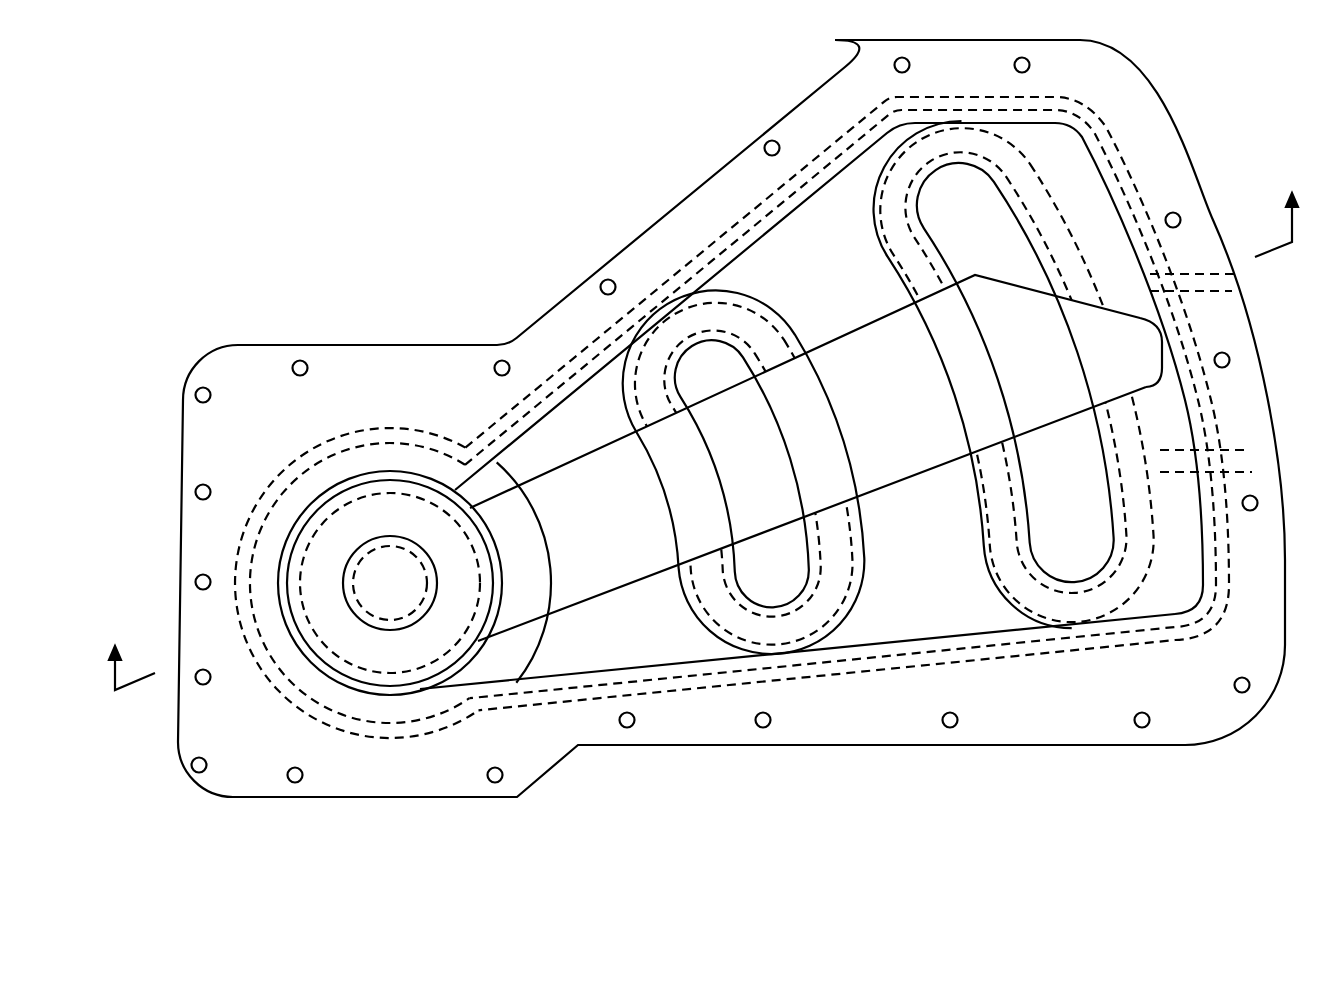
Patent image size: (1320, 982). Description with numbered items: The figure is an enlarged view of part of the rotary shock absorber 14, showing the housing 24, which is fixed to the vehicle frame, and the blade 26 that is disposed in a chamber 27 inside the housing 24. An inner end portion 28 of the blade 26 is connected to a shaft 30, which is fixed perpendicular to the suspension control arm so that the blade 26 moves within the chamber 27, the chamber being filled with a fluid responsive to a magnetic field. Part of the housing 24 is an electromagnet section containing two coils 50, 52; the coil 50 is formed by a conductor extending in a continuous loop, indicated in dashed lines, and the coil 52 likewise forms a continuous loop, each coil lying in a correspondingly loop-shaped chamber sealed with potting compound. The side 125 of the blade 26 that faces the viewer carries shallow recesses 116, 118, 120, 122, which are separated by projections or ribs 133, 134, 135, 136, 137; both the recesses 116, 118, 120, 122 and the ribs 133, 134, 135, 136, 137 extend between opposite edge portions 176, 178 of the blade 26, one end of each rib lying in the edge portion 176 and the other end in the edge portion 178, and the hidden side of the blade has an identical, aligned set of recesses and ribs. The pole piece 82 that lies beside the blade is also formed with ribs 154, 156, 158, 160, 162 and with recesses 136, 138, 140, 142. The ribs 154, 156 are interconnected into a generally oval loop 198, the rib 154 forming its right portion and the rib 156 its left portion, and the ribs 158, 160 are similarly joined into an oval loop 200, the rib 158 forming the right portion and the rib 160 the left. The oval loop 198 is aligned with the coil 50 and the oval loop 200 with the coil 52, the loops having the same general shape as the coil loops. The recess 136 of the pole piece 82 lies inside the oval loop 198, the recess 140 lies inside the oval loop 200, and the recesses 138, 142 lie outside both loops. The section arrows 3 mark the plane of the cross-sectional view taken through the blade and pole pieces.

The rotary shock absorber 14 is at (345, 210).
The housing 24 is at (1083, 728).
The blade 26 is at (1175, 345).
The chamber 27 is at (673, 652).
The inner end portion 28 is at (333, 557).
The shaft 30 is at (398, 600).
The coil 50 is at (963, 140).
The coil 52 is at (673, 323).
The pole piece 82 is at (825, 205).
The recess 116 is at (1015, 372).
The recess 118 is at (966, 374).
The recess 120 is at (742, 473).
The recess 122 is at (562, 593).
The side of the blade 125 is at (1015, 371).
The rib 133 is at (1100, 357).
The rib 134 is at (973, 375).
The rib 135 is at (807, 448).
The rib 136 is at (673, 470).
The rib 137 is at (523, 555).
The recess 138 is at (797, 711).
The recess 140 is at (745, 558).
The recess 142 is at (797, 711).
The rib 154 is at (1090, 250).
The rib 156 is at (940, 257).
The rib 158 is at (742, 358).
The rib 160 is at (628, 402).
The rib 162 is at (493, 663).
The edge portion 176 is at (816, 384).
The edge portion 178 is at (932, 473).
The oval loop 198 is at (874, 138).
The oval loop 200 is at (710, 441).
The section line 3- 3 is at (696, 425).